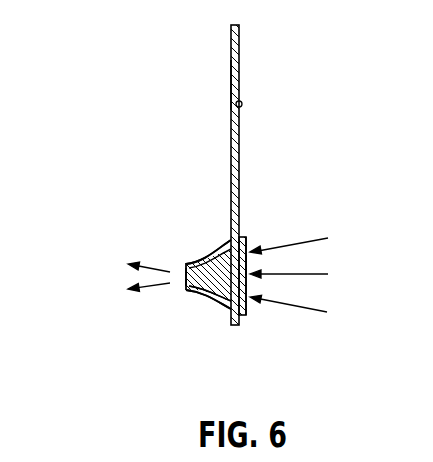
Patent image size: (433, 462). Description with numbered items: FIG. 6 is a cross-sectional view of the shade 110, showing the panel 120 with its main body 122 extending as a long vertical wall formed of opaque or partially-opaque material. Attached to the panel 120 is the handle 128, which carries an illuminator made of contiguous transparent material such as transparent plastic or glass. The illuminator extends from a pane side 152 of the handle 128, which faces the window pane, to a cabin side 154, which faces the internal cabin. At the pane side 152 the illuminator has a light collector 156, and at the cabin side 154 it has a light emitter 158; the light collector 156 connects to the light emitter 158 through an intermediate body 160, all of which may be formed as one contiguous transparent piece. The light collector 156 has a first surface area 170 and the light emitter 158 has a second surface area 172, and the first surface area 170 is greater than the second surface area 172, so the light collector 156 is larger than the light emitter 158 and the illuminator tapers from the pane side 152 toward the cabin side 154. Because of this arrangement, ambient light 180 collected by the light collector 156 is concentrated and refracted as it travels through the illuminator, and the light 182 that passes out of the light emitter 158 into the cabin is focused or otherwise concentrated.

The shade 110 is at (230, 55).
The panel 120 is at (231, 82).
The main body 122 is at (236, 104).
The handle 128 is at (213, 250).
The pane side 152 is at (242, 237).
The cabin side 154 is at (184, 284).
The light collector 156 is at (247, 247).
The light emitter 158 is at (186, 264).
The intermediate body 160 is at (212, 300).
The first surface area 170 is at (247, 265).
The second surface area 172 is at (183, 277).
The ambient light 180 is at (288, 275).
The light 182 is at (182, 275).